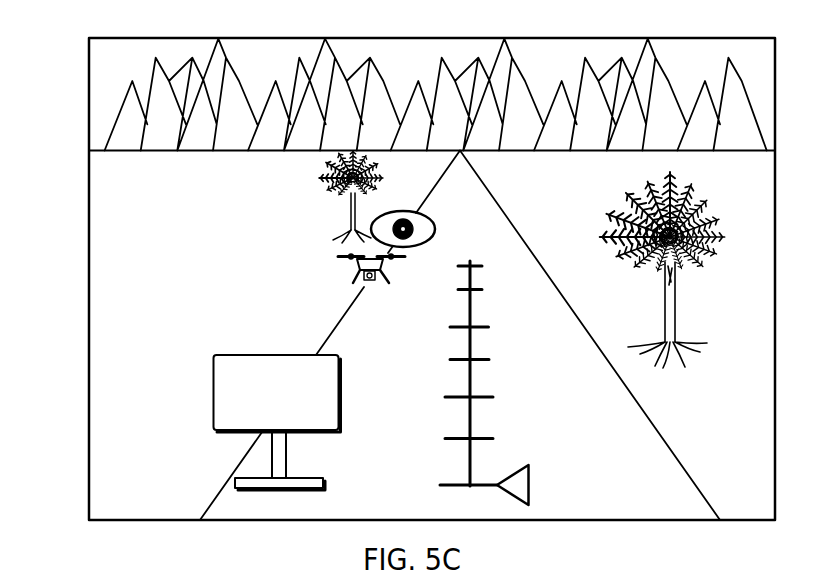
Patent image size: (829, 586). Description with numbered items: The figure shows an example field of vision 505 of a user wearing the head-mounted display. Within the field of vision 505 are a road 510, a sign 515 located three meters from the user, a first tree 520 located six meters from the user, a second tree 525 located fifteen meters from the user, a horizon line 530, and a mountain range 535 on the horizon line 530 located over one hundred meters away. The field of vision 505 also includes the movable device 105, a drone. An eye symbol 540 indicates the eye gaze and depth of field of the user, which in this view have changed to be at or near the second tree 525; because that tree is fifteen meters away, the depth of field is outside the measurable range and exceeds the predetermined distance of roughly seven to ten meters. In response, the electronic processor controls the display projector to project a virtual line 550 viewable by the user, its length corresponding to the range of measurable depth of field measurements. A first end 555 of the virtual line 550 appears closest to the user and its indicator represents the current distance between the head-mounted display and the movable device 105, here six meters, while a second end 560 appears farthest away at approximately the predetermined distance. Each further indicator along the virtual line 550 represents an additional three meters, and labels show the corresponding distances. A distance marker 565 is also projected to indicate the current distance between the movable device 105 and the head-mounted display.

The movable device 105 is at (340, 257).
The field of vision 505 is at (89, 91).
The road 510 is at (672, 462).
The sign 515 is at (213, 393).
The first tree 520 is at (687, 343).
The second tree 525 is at (343, 235).
The horizon line 530 is at (124, 152).
The mountain range 535 is at (653, 50).
The eye symbol 540 is at (435, 217).
The virtual line 550 is at (469, 367).
The first end 555 is at (490, 487).
The second end 560 is at (475, 261).
The distance marker 565 is at (531, 488).